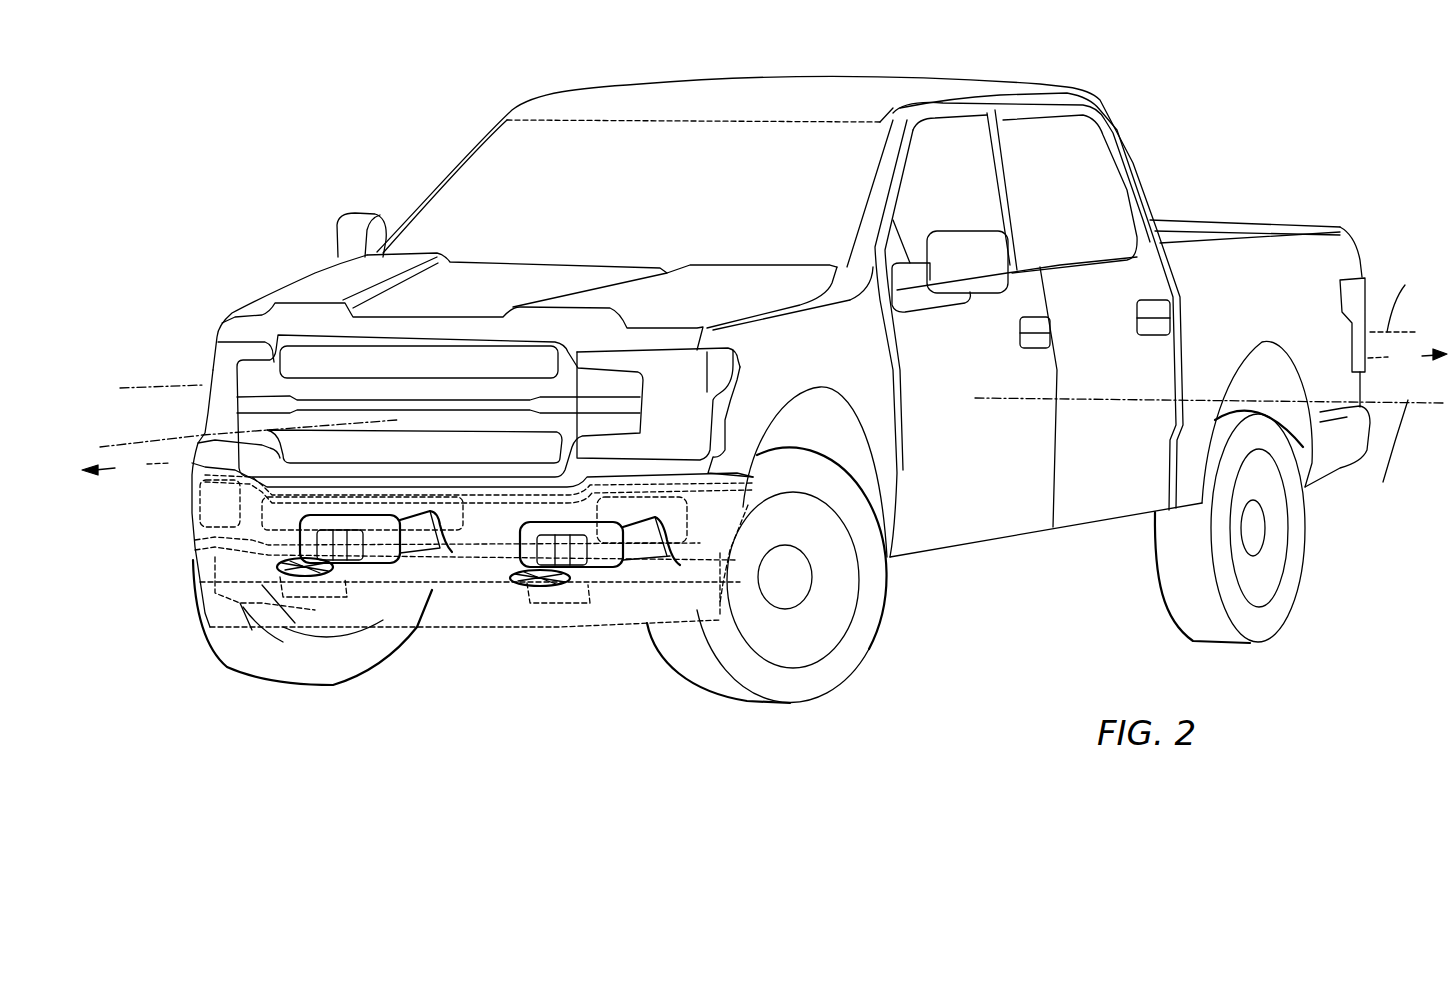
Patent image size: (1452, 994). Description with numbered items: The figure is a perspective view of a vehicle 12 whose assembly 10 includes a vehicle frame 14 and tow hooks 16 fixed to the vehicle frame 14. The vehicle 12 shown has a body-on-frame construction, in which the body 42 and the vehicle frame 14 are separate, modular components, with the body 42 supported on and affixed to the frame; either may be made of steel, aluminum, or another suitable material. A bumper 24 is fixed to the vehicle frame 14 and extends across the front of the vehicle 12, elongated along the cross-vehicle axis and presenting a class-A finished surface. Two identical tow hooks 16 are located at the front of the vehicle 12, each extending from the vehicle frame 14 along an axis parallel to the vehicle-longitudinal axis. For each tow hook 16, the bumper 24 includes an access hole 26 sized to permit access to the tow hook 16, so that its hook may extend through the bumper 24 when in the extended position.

The assembly 10 is at (311, 729).
The vehicle 12 is at (1263, 116).
The vehicle frame 14 is at (300, 527).
The tow hook 16 is at (297, 580).
The bumper 24 is at (455, 625).
The access hole 26 is at (310, 600).
The body 42 is at (978, 556).